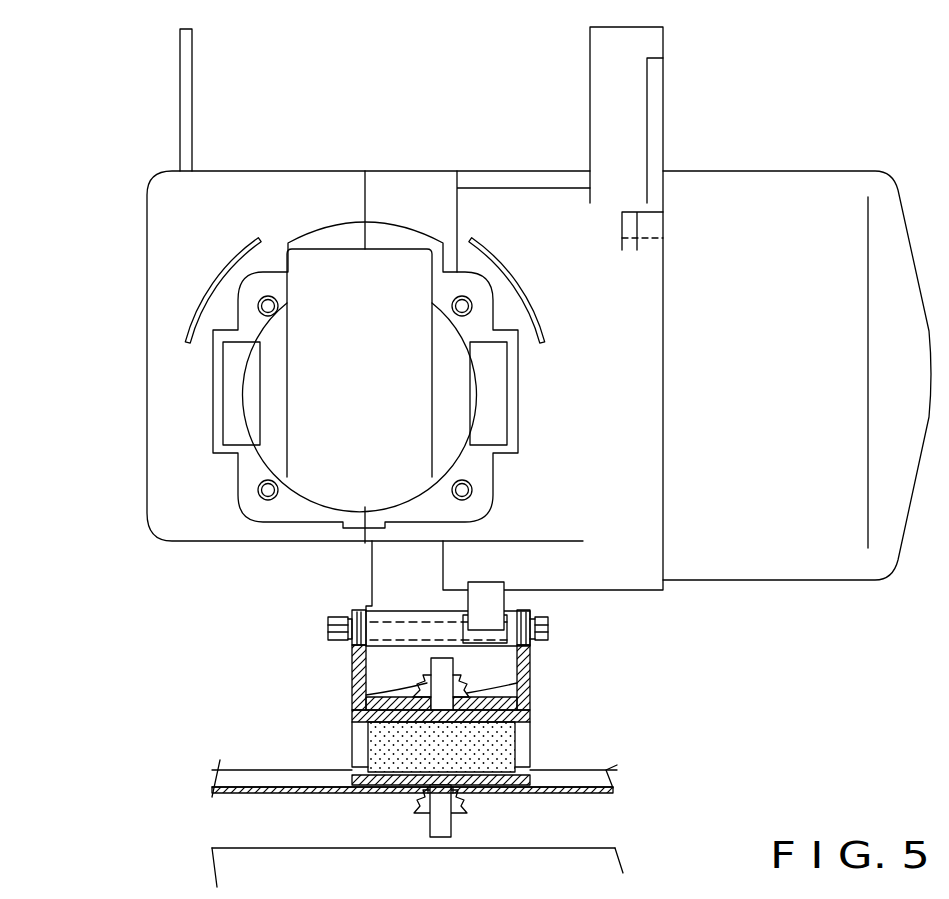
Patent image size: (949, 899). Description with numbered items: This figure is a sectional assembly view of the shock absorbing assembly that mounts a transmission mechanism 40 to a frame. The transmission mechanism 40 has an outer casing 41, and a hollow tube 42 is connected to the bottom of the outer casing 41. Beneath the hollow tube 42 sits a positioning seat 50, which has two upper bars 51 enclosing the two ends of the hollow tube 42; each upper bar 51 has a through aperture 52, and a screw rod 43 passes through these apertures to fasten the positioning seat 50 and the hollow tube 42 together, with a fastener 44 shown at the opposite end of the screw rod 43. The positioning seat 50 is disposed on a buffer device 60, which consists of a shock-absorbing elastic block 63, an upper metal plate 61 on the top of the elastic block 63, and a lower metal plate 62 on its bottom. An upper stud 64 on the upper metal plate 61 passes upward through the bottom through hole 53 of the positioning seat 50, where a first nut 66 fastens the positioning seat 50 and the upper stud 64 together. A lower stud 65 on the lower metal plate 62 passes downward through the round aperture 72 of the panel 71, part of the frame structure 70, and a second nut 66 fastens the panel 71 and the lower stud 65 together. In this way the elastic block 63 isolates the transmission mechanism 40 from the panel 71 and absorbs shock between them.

The transmission mechanism 40 is at (396, 132).
The outer casing 41 is at (165, 383).
The hollow tube 42 is at (417, 608).
The screw rod 43 is at (548, 625).
The bolt 44 is at (340, 616).
The positioning seat 50 is at (439, 677).
The upper bars 51 is at (352, 662).
The through aperture 52 is at (360, 611).
The bottom through hole 53 is at (367, 690).
The buffer device 60 is at (435, 763).
The upper metal plate 61 is at (360, 716).
The lower metal plate 62 is at (357, 786).
The shock-absorbing elastic block 63 is at (500, 742).
The upper stud 64 is at (447, 665).
The lower stud 65 is at (440, 838).
The first nut 66 is at (421, 693).
The mounting panel 70 is at (424, 797).
The panel 71 is at (250, 792).
The round aperture 72 is at (454, 788).